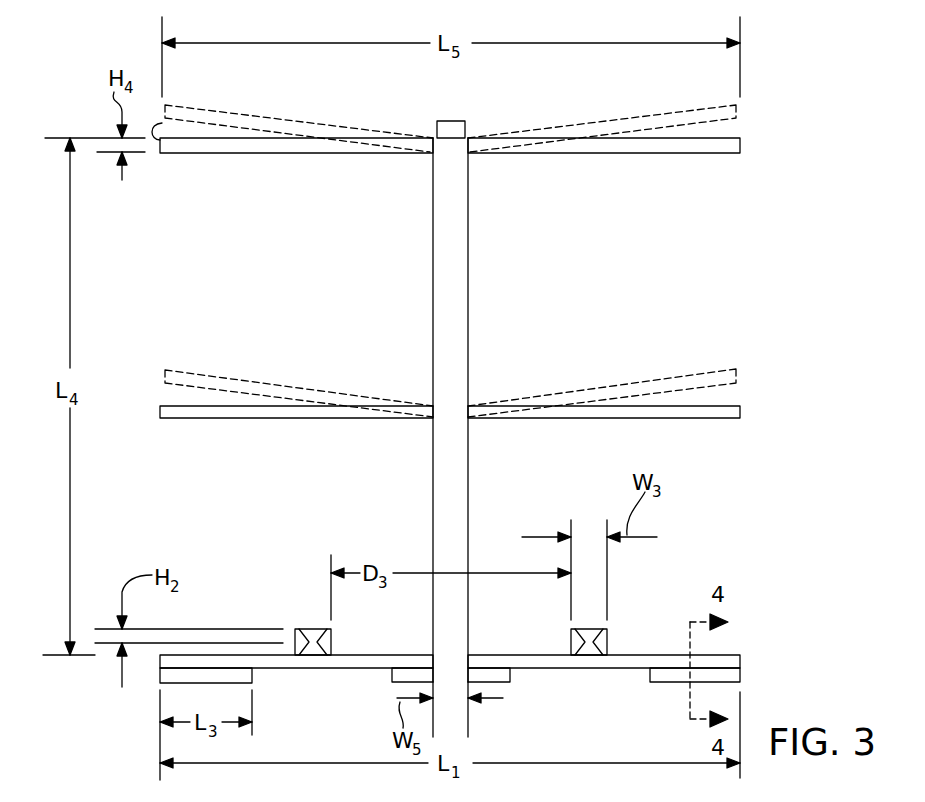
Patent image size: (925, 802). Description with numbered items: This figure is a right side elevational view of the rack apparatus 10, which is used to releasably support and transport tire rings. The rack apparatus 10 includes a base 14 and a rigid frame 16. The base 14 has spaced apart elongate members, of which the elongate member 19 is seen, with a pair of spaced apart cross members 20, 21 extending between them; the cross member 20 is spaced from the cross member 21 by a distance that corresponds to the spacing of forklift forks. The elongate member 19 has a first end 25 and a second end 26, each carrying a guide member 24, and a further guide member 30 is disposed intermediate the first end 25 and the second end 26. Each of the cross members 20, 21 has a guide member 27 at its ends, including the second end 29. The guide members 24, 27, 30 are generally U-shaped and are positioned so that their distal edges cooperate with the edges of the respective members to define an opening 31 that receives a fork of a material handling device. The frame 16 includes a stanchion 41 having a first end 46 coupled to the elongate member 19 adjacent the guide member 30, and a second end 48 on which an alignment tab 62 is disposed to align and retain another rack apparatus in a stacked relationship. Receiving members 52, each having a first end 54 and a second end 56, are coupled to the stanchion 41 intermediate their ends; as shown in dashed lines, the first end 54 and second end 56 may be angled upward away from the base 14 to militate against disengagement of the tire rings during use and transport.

The rack apparatus 10 is at (62, 80).
The base 14 is at (227, 645).
The rigid frame 16 is at (301, 128).
The elongate member 19 is at (258, 655).
The cross member 20 is at (332, 630).
The cross member 21 is at (607, 631).
The guide member 24 is at (165, 676).
The first end 25 is at (190, 655).
The second end 26 is at (740, 655).
The guide member 27 is at (338, 642).
The second end 29 is at (306, 628).
The guide member 30 is at (503, 690).
The opening 31 is at (313, 647).
The stanchion 41 is at (458, 472).
The first end 46 is at (453, 683).
The second end 48 is at (447, 185).
The receiving member 52 is at (258, 110).
The first end 54 is at (163, 125).
The second end 56 is at (740, 145).
The alignment tab 62 is at (450, 121).